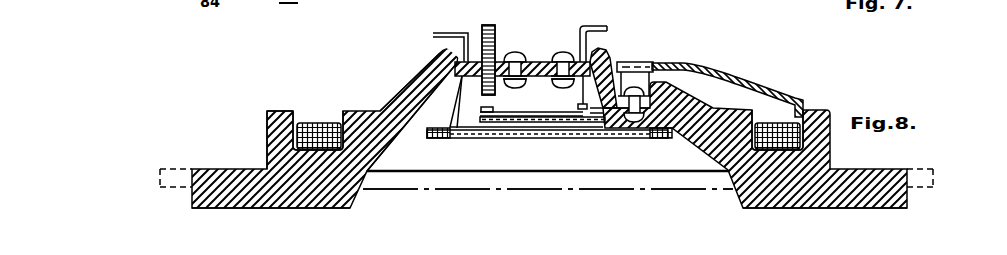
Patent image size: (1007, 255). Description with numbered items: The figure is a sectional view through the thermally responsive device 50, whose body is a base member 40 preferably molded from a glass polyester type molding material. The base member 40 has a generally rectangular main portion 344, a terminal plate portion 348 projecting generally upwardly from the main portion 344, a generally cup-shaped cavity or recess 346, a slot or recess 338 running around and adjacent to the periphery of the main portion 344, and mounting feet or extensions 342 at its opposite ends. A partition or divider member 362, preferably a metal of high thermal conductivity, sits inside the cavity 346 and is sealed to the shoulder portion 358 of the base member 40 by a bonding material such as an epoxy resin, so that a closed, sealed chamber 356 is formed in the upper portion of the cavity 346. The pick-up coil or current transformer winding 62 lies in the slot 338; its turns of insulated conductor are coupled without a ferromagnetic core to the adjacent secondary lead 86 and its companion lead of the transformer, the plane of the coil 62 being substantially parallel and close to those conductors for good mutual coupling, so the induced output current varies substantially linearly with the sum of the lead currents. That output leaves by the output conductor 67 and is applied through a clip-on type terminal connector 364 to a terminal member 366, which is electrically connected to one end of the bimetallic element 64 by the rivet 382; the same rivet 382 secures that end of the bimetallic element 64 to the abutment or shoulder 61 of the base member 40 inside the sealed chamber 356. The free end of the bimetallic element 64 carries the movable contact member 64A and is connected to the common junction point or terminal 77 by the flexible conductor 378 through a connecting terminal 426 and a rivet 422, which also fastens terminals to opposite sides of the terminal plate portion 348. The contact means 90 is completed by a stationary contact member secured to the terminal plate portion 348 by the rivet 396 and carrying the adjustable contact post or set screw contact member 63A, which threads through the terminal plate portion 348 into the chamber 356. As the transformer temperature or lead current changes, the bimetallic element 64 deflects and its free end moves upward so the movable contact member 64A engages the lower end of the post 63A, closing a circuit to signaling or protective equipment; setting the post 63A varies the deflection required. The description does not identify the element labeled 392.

The base member 40 is at (867, 165).
The thermally responsive device 50 is at (312, 231).
The abutment or shoulder 61 is at (608, 122).
The pick-up coil or current transformer winding 62 is at (316, 123).
The adjustable contact post or set screw contact member 63A is at (490, 26).
The bimetallic element 64 is at (493, 111).
The movable contact member 64A is at (494, 108).
The output conductor 67 is at (738, 78).
The common junction point or terminal 77 is at (607, 27).
The secondary lead 86 is at (421, 187).
The contact means 90 is at (470, 21).
The slot or recess 338 is at (338, 113).
The mounting feet or extensions 342 is at (212, 169).
The main portion 344 is at (267, 123).
The cup-shaped cavity or recess 346 is at (654, 167).
The terminal plate portion 348 is at (420, 76).
The sealed chamber 356 is at (457, 128).
The shoulder portion 358 is at (445, 138).
The partition or divider member 362 is at (484, 138).
The clip-on type terminal connector 364 is at (627, 62).
The terminal member 366 is at (640, 62).
The flexible conductor 378 is at (527, 122).
The rivet 382 is at (631, 124).
The bracket 392 is at (434, 34).
The rivet 396 is at (514, 53).
The rivet 422 is at (564, 53).
The connecting terminal 426 is at (580, 97).